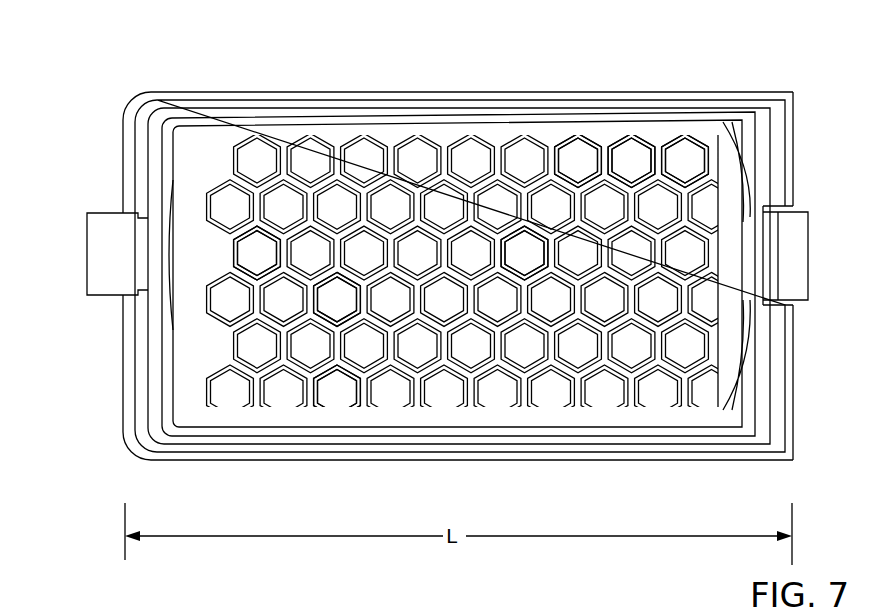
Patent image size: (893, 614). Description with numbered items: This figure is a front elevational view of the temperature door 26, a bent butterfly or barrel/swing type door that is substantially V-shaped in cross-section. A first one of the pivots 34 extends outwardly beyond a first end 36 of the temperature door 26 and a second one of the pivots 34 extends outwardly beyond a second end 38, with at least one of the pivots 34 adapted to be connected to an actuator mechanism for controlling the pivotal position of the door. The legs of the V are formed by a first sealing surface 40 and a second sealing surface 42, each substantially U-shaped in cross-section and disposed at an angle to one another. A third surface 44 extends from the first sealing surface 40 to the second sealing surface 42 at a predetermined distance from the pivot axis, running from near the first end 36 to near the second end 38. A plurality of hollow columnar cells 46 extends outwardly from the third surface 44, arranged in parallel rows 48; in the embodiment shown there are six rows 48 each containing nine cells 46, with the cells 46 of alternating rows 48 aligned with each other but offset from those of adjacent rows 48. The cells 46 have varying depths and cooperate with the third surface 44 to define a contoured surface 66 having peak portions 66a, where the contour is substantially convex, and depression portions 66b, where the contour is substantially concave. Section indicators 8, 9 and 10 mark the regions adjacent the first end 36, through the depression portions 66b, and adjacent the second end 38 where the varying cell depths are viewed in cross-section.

The temperature door 26 is at (768, 46).
The pivots 34 is at (87, 247).
The first end 36 is at (795, 420).
The second end 38 is at (124, 418).
The first sealing surface 40 is at (745, 462).
The second sealing surface 42 is at (738, 92).
The third surface 44 is at (455, 271).
The hollow columnar cells 46 is at (704, 151).
The rows 48 is at (690, 207).
The contoured surface 66 is at (453, 373).
The peak portions 66a is at (543, 253).
The depression portions 66b is at (337, 330).
The section line 8 is at (598, 510).
The section line 9 is at (383, 510).
The section line 10 is at (223, 510).